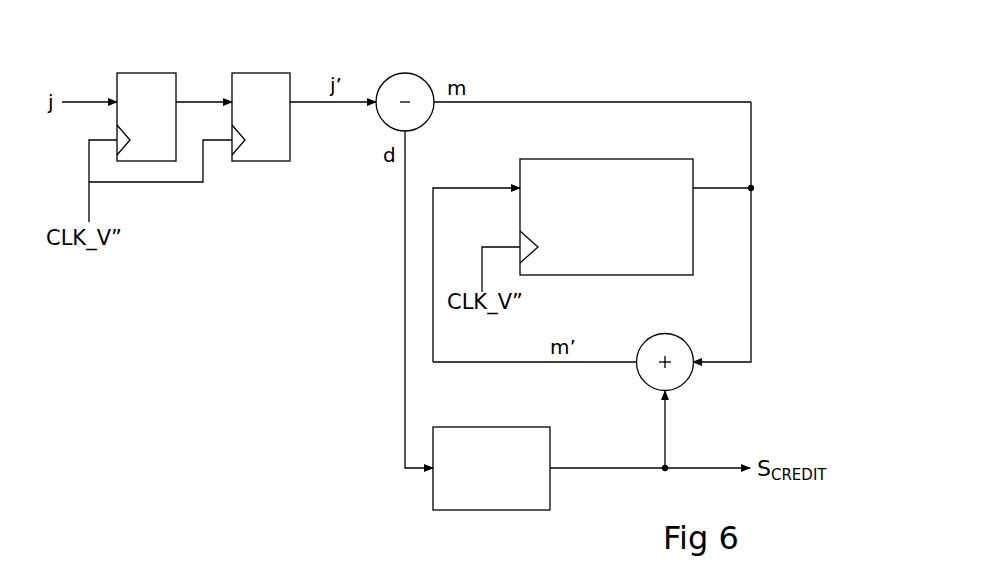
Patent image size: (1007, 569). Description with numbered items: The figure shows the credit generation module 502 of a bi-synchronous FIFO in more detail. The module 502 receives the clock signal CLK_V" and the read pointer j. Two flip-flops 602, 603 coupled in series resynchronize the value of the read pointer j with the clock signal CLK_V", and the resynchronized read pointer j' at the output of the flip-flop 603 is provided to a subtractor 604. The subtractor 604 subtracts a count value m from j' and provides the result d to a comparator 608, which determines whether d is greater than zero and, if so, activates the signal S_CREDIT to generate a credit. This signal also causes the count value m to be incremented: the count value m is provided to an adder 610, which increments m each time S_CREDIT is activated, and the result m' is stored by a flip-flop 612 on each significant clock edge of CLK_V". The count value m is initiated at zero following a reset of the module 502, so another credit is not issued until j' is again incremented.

The credit generation module 502 is at (776, 63).
The flip-flop 602 is at (145, 84).
The flip-flop 603 is at (257, 84).
The subtractor 604 is at (405, 84).
The comparator 608 is at (520, 507).
The adder 610 is at (670, 346).
The flip-flop 612 is at (612, 172).